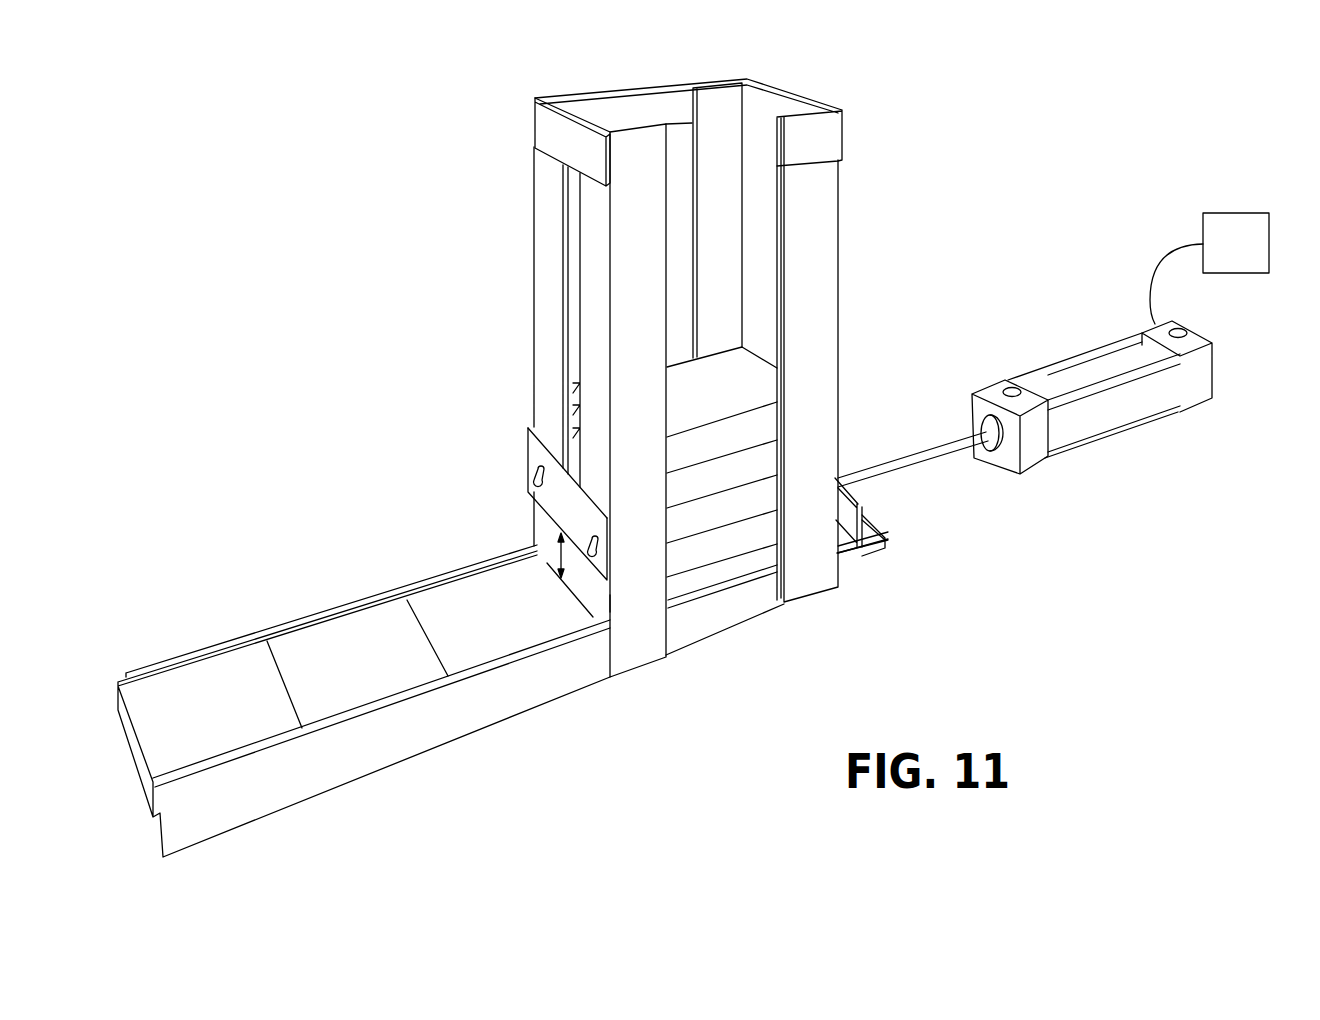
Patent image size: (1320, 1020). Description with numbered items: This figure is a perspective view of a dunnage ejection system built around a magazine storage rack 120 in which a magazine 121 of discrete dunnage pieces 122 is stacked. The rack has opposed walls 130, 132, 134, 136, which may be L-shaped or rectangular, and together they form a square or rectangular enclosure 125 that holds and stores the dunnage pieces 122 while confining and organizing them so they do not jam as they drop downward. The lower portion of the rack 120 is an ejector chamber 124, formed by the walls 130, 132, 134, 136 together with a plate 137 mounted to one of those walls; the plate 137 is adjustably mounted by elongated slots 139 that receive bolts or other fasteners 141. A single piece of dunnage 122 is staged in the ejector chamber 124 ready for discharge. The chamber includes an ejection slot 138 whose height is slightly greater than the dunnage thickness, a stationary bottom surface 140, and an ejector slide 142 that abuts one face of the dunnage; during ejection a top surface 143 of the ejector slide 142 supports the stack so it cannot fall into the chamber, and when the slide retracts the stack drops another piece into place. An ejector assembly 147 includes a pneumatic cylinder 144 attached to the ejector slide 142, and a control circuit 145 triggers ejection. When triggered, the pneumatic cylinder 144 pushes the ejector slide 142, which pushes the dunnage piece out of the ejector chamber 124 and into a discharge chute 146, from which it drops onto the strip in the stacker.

The magazine storage rack 120 is at (757, 425).
The magazine 121 is at (690, 388).
The dunnage pieces 122 is at (455, 608).
The ejector chamber 124 is at (582, 578).
The enclosure 125 is at (722, 228).
The wall 130 is at (641, 157).
The wall 132 is at (549, 222).
The wall 134 is at (585, 108).
The wall 136 is at (753, 103).
The plate 137 is at (528, 427).
The ejection slot 138 is at (547, 527).
The elongated slots 139 is at (535, 465).
The fasteners 141 is at (542, 493).
The bottom surface 140 is at (613, 603).
The ejector slide 142 is at (848, 557).
The top surface 143 is at (868, 518).
The pneumatic cylinder 144 is at (932, 453).
The control circuit 145 is at (1235, 213).
The discharge chute 146 is at (296, 778).
The ejector assembly 147 is at (1028, 496).